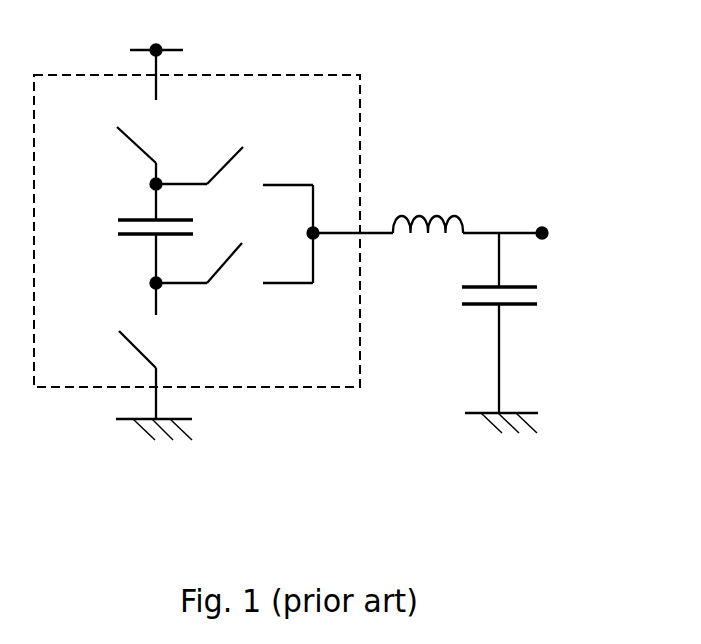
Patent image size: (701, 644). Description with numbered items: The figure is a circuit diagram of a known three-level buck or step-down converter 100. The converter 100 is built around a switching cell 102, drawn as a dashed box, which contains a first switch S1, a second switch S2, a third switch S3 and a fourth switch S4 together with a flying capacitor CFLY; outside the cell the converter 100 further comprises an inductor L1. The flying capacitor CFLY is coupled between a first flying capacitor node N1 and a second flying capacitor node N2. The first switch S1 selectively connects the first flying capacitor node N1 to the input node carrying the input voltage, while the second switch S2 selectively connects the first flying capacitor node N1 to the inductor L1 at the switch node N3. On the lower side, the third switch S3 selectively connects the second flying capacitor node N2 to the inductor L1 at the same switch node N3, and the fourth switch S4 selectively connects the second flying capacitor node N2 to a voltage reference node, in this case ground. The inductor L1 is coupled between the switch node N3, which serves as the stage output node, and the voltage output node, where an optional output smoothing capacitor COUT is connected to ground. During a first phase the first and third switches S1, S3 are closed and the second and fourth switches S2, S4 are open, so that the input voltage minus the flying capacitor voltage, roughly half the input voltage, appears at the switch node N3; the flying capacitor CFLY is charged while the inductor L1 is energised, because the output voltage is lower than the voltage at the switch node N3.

The three-level buck converter 100 is at (423, 128).
The switching cell 102 is at (349, 107).
The first switch S1 is at (152, 152).
The second switch S2 is at (260, 180).
The third switch S3 is at (260, 277).
The fourth switch S4 is at (151, 351).
The first flying capacitor node N1 is at (157, 184).
The second flying capacitor node N2 is at (159, 284).
The switch node N3 is at (331, 234).
The flying capacitor CFLY is at (125, 233).
The inductor L1 is at (428, 205).
The output capacitor COUT is at (535, 323).